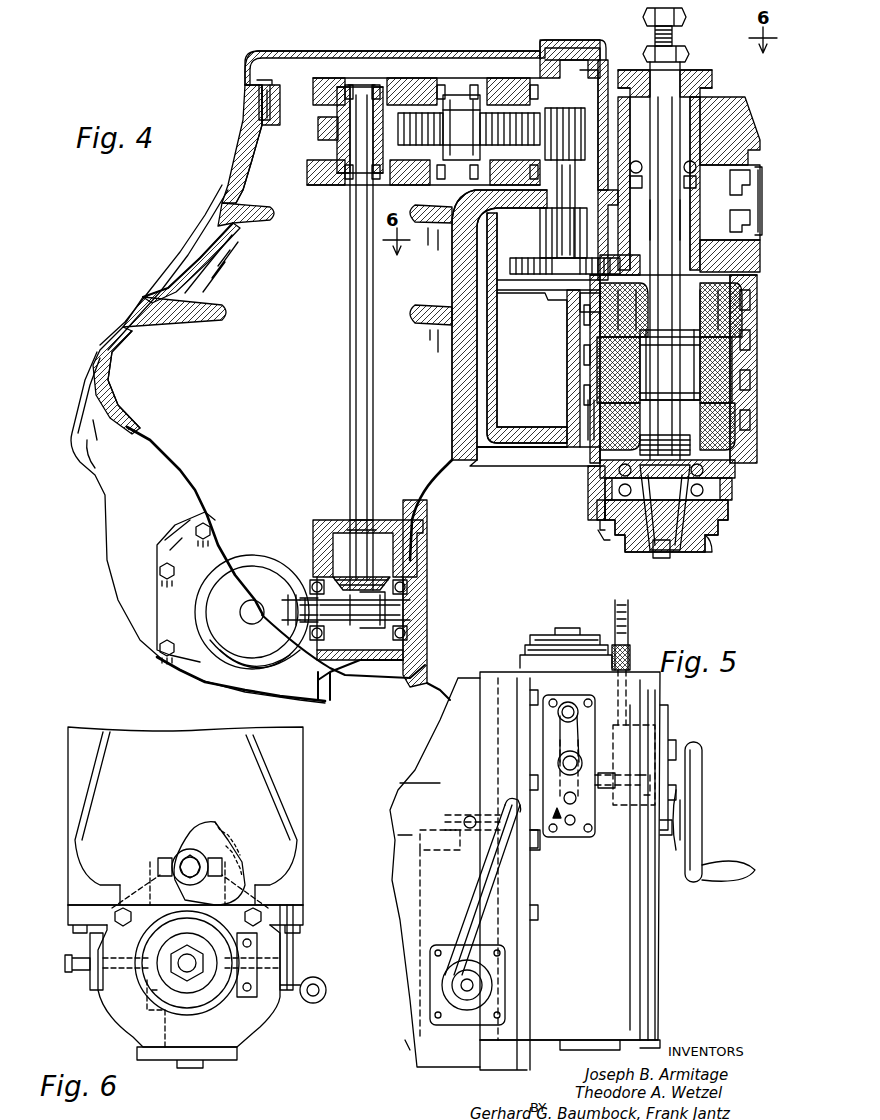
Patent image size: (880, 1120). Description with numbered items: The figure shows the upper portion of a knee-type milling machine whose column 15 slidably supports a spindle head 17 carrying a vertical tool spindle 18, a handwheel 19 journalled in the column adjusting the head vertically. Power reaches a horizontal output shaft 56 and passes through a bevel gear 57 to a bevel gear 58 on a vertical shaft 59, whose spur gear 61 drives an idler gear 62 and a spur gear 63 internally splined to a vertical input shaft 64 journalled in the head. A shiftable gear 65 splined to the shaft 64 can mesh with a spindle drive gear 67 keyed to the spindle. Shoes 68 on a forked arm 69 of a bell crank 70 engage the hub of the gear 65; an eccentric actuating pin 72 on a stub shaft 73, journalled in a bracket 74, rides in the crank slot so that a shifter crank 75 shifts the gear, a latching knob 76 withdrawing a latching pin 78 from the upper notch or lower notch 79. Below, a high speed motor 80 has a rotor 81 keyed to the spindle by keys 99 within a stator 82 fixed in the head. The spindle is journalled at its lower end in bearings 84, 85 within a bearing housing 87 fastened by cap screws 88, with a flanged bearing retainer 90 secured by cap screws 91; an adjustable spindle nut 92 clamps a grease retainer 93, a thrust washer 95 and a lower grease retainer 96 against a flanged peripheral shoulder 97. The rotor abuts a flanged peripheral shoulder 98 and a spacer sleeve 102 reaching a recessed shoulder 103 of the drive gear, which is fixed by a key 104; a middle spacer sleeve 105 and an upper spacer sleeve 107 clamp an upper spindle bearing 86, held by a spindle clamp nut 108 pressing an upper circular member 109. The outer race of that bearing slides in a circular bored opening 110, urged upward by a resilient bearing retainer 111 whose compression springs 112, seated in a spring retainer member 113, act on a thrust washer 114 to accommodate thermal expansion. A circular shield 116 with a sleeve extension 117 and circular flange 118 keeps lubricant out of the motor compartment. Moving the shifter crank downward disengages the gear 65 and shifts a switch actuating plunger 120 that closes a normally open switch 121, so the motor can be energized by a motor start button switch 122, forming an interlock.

In FIG. 4, the column 15 is at (108, 483).
In FIG. 5, the column 15 is at (395, 917).
In FIG. 4, the spindle head 17 is at (495, 336).
In FIG. 5, the spindle head 17 is at (640, 960).
In FIG. 4, the tool spindle 18 is at (685, 545).
In FIG. 5, the handwheel 19 is at (700, 795).
In FIG. 4, the output shaft 56 is at (303, 600).
In FIG. 4, the bevel gear 57 is at (400, 612).
In FIG. 4, the bevel gear 58 is at (415, 572).
In FIG. 4, the vertical shaft 59 is at (348, 400).
In FIG. 4, the spur gear 61 is at (318, 126).
In FIG. 4, the idler gear 62 is at (430, 147).
In FIG. 4, the spur gear 63 is at (532, 143).
In FIG. 4, the vertical input shaft 64 is at (548, 228).
In FIG. 4, the shiftable gear 65 is at (545, 258).
In FIG. 5, the shiftable gear 65 is at (445, 858).
In FIG. 6, the shiftable gear 65 is at (213, 818).
In FIG. 4, the spindle drive gear 67 is at (710, 262).
In FIG. 6, the shoes 68 is at (150, 862).
In FIG. 5, the forked arm 69 is at (560, 790).
In FIG. 6, the forked arm 69 is at (232, 880).
In FIG. 5, the bell crank 70 is at (555, 845).
In FIG. 5, the eccentric actuating pin 72 is at (540, 755).
In FIG. 5, the stub shaft 73 is at (555, 765).
In FIG. 5, the bracket 74 is at (592, 832).
In FIG. 5, the shifter crank 75 is at (585, 730).
In FIG. 5, the latching knob 76 is at (570, 700).
In FIG. 6, the latching knob 76 is at (65, 962).
In FIG. 6, the latching pin 78 is at (88, 980).
In FIG. 5, the lower notch 79 is at (570, 828).
In FIG. 4, the high speed motor 80 is at (720, 296).
In FIG. 4, the rotor 81 is at (735, 322).
In FIG. 4, the stator 82 is at (720, 363).
In FIG. 4, the lower spindle bearing 84 is at (728, 517).
In FIG. 4, the bearing 85 is at (728, 474).
In FIG. 4, the upper spindle bearing 86 is at (700, 160).
In FIG. 4, the bearing housing 87 is at (728, 494).
In FIG. 4, the cap screws 88 is at (595, 468).
In FIG. 4, the flanged bearing retainer 90 is at (715, 528).
In FIG. 4, the cap screws 91 is at (598, 515).
In FIG. 4, the spindle nut 92 is at (596, 418).
In FIG. 4, the grease retainer 93 is at (605, 470).
In FIG. 4, the thrust washer 95 is at (640, 440).
In FIG. 4, the lower grease retainer 96 is at (605, 536).
In FIG. 4, the flanged peripheral shoulder 97 is at (665, 507).
In FIG. 4, the flanged peripheral shoulder 98 is at (640, 384).
In FIG. 4, the keys 99 is at (640, 365).
In FIG. 4, the spacer sleeve 102 is at (640, 343).
In FIG. 4, the recessed shoulder 103 is at (630, 238).
In FIG. 4, the key 104 is at (665, 261).
In FIG. 4, the middle spacer sleeve 105 is at (588, 212).
In FIG. 4, the upper spacer sleeve 107 is at (688, 135).
In FIG. 4, the spindle clamp nut 108 is at (680, 72).
In FIG. 4, the upper circular member 109 is at (712, 82).
In FIG. 4, the circular bored opening 110 is at (640, 75).
In FIG. 4, the resilient bearing retainer 111 is at (712, 180).
In FIG. 4, the compression springs 112 is at (700, 160).
In FIG. 4, the spring retainer member 113 is at (680, 190).
In FIG. 4, the thrust washer 114 is at (582, 140).
In FIG. 4, the circular shield 116 is at (592, 300).
In FIG. 4, the sleeve extension 117 is at (705, 307).
In FIG. 4, the circular flange 118 is at (626, 307).
In FIG. 5, the switch actuating plunger 120 is at (595, 805).
In FIG. 5, the switch 121 is at (648, 755).
In FIG. 4, the motor start button switch 122 is at (762, 183).
In FIG. 5, the motor start button switch 122 is at (675, 740).